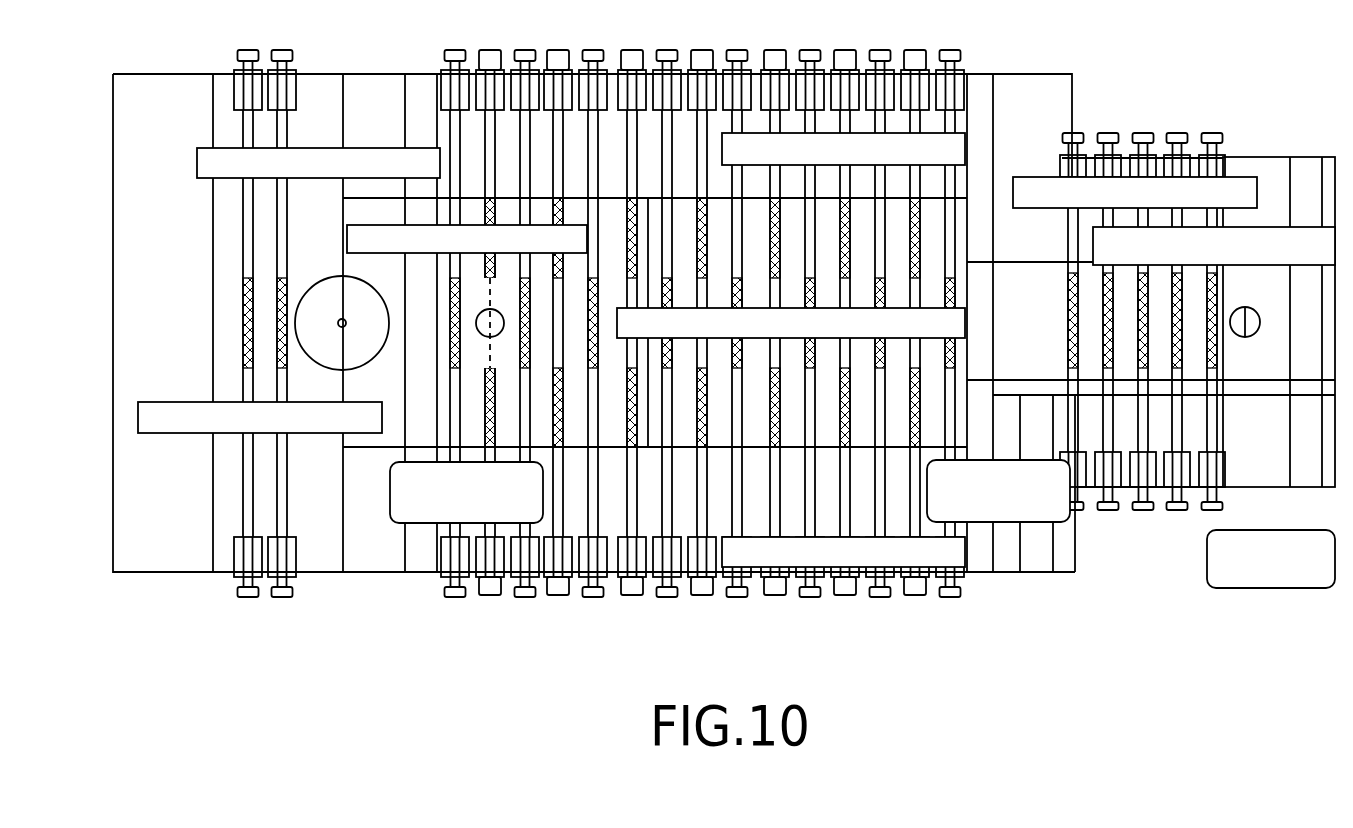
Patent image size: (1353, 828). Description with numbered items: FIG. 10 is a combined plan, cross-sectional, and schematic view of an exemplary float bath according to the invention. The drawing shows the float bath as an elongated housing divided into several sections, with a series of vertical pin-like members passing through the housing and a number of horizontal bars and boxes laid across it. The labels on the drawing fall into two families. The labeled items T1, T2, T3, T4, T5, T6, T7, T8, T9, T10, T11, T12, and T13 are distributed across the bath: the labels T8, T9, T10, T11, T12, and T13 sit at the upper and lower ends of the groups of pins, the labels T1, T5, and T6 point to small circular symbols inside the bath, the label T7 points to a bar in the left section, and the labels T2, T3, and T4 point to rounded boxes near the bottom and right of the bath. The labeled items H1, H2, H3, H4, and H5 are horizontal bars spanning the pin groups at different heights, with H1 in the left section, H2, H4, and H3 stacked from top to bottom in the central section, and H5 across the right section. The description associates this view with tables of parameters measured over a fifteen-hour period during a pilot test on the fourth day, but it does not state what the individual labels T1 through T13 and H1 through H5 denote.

The temperature sensor T1 is at (337, 323).
The temperature sensor T2 is at (414, 363).
The temperature sensor T3 is at (912, 340).
The temperature sensor T4 is at (1245, 427).
The temperature sensor T5 is at (484, 316).
The temperature sensor T6 is at (1245, 307).
The temperature sensor T7 is at (342, 319).
The temperature sensor T8 (upper pin ends) T8 is at (267, 58).
The temperature sensor T9 (lower pin ends) T9 is at (268, 591).
The temperature sensor T10 (upper pin ends) T10 is at (702, 58).
The temperature sensor T11 (lower pin ends) T11 is at (702, 593).
The temperature sensor T12 (upper pin ends) T12 is at (1142, 131).
The temperature sensor T13 (lower pin ends) T13 is at (1142, 505).
The heater H1 is at (260, 418).
The heater H2 is at (708, 241).
The heater H3 is at (708, 398).
The heater H4 is at (950, 326).
The heater H5 is at (1135, 193).